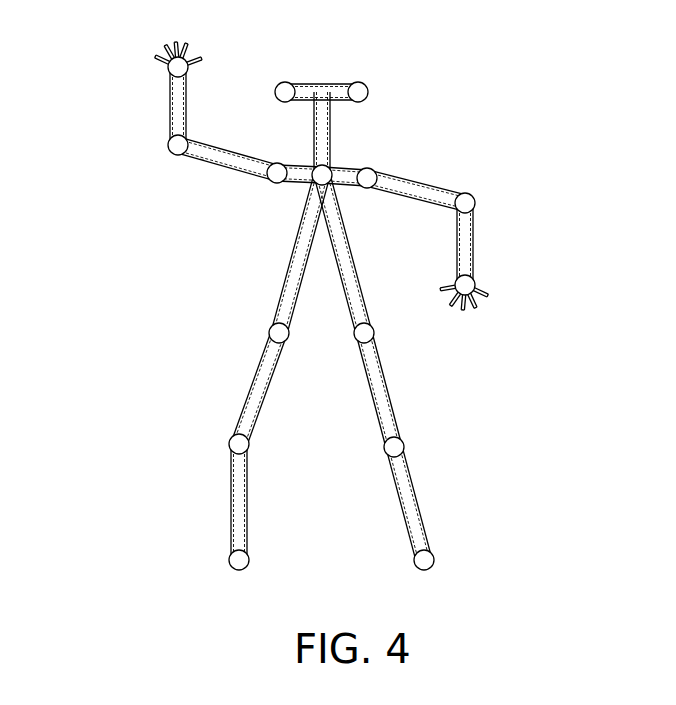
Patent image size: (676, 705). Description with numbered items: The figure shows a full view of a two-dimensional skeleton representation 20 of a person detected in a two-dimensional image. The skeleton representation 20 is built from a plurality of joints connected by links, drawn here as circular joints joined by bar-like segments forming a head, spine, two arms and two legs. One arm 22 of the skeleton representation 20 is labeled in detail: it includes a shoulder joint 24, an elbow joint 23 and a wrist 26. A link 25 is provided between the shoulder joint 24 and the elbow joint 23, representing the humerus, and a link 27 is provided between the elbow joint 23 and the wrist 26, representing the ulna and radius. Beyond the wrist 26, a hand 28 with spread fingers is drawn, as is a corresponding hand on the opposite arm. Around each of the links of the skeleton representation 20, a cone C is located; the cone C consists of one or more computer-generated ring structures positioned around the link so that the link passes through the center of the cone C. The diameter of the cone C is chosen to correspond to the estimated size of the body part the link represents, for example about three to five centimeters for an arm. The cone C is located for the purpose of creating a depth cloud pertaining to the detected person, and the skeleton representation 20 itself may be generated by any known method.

The 2D skeleton representation 20 is at (477, 148).
The arm 22 is at (154, 118).
The elbow joint 23 is at (167, 145).
The shoulder joint 24 is at (282, 157).
The link 25 is at (240, 164).
The wrist 26 is at (167, 67).
The link 27 is at (183, 107).
The fingers / hand 28 is at (186, 49).
The cone C is at (195, 160).